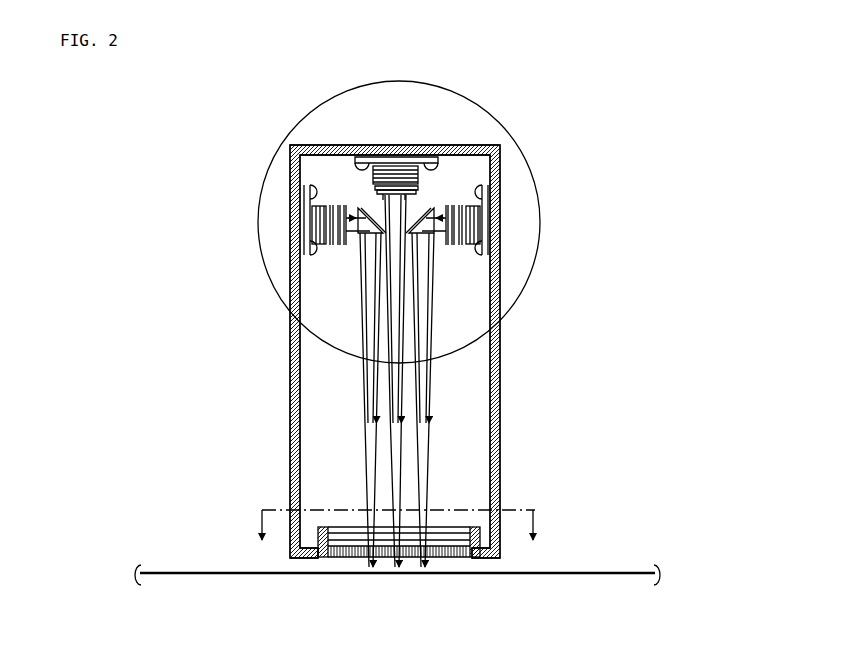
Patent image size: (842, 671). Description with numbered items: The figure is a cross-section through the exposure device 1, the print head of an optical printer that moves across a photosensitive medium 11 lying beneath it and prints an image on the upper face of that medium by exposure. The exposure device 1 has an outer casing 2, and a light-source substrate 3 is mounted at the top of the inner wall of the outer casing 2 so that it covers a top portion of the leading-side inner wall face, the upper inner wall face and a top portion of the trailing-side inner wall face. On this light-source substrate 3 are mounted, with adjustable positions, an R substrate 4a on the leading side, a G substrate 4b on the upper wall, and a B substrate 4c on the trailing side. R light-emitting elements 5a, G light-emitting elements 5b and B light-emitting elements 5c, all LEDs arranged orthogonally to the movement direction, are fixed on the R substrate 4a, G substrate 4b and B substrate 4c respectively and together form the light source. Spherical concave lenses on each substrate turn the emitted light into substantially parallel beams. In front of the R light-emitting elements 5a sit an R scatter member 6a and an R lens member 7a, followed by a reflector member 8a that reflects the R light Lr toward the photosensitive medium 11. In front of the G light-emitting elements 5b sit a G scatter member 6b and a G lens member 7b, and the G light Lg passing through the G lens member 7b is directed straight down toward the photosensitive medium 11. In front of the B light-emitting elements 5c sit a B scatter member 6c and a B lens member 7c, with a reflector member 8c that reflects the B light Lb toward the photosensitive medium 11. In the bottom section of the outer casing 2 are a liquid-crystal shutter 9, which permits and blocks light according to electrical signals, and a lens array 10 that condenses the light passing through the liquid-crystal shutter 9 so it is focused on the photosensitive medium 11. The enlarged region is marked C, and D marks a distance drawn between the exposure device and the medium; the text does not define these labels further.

The exposure device 1 is at (448, 105).
The outer casing 2 is at (300, 147).
The light-source substrate 3 is at (362, 158).
The R substrate 4a is at (312, 215).
The G substrate 4b is at (380, 166).
The B substrate 4c is at (478, 225).
The R light-emitting elements 5a is at (330, 236).
The G light-emitting elements 5b is at (425, 178).
The B light-emitting elements 5c is at (462, 230).
The R scatter member 6a is at (302, 283).
The G scatter member 6b is at (420, 190).
The B scatter member 6c is at (456, 232).
The R lens member 7a is at (302, 300).
The G lens member 7b is at (420, 197).
The B lens member 7c is at (450, 238).
The reflector member 8a is at (362, 236).
The reflector member 8c is at (430, 236).
The liquid-crystal shutter 9 is at (318, 556).
The lens array 10 is at (345, 560).
The photosensitive medium 11 is at (480, 574).
The enlarged portion C is at (432, 86).
The distance D is at (396, 534).
The R light Lr is at (378, 478).
The G light Lg is at (400, 498).
The B light Lb is at (435, 500).